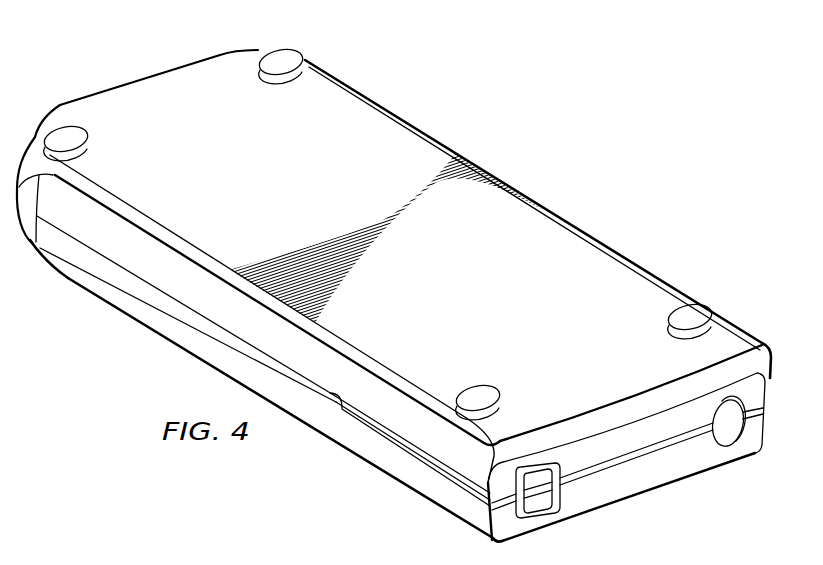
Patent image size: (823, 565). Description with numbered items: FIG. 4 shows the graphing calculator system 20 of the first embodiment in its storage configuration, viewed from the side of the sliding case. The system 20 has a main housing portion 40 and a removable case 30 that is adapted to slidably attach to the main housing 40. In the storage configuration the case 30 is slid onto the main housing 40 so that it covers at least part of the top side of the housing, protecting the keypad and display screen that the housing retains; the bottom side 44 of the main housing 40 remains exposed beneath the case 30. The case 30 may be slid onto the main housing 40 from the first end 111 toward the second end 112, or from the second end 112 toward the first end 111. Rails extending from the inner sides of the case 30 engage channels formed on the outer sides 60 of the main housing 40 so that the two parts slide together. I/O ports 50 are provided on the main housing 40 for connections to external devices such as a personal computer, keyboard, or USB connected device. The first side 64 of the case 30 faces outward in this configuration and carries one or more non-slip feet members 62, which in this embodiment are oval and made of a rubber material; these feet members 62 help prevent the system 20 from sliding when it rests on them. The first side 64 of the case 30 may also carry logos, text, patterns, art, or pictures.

The system 20 is at (530, 152).
The removable case 30 is at (617, 277).
The main housing portion 40 is at (680, 467).
The bottom side 44 is at (437, 505).
The I/O ports 50 is at (532, 513).
The outer sides 60 is at (388, 464).
The non-slip feet members 62 is at (72, 134).
The first side 64 is at (408, 146).
The first end 111 is at (645, 492).
The second end 112 is at (65, 276).